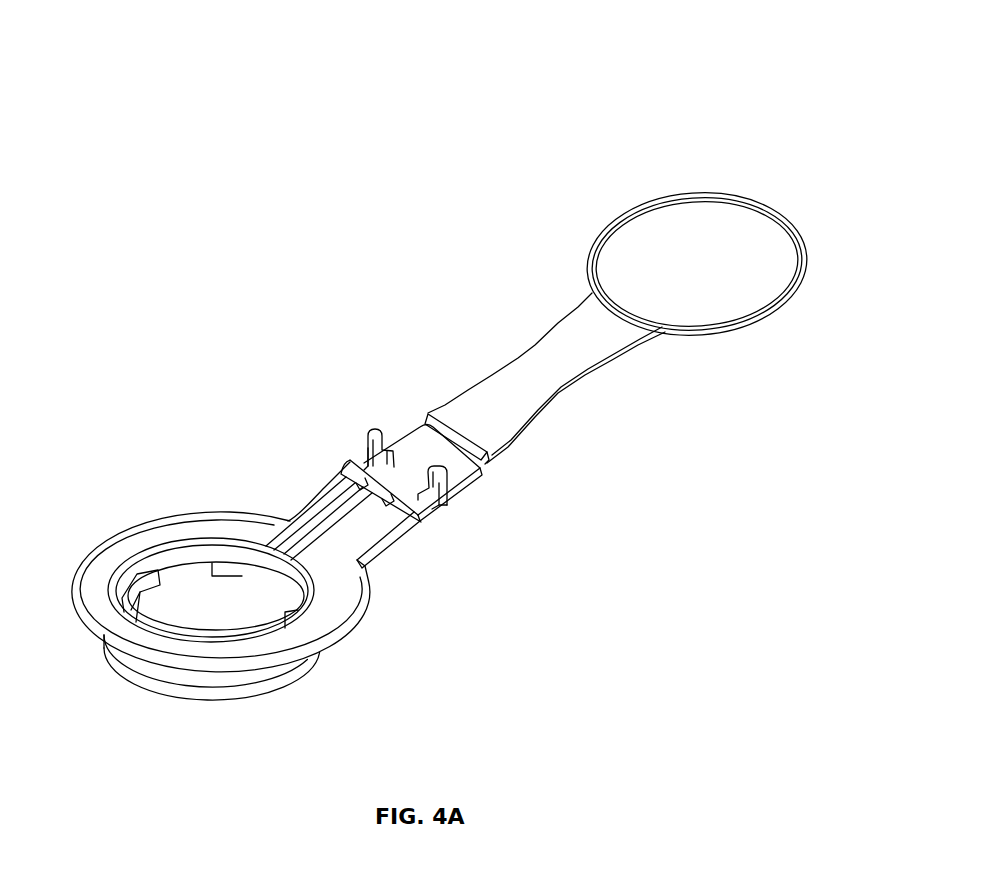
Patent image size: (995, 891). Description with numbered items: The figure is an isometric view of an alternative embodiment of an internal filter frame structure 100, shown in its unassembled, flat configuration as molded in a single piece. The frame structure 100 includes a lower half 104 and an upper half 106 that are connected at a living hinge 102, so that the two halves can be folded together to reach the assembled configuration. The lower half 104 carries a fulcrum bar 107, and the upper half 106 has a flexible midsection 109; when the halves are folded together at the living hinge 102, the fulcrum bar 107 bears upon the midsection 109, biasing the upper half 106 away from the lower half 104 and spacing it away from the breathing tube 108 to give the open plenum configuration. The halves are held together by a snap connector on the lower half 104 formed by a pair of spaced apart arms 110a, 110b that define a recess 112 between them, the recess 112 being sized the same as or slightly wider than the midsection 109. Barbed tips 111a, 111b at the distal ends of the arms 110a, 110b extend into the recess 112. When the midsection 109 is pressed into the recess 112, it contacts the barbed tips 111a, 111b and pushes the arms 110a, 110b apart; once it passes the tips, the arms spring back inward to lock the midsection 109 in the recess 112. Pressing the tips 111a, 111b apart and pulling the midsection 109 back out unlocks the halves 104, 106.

The frame structure 100 is at (230, 130).
The living hinge 102 is at (453, 440).
The lower half 104 is at (134, 510).
The upper half 106 is at (628, 189).
The fulcrum bar 107 is at (362, 473).
The breathing tube 108 is at (221, 640).
The flexible midsection 109 is at (525, 370).
The spaced apart arm 110a is at (443, 497).
The spaced apart arm 110b is at (370, 443).
The barbed tip 111a is at (442, 485).
The barbed tip 111b is at (383, 432).
The recess 112 is at (408, 477).